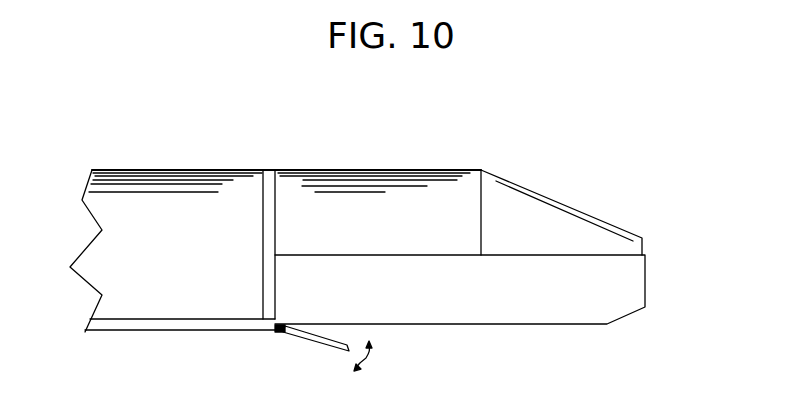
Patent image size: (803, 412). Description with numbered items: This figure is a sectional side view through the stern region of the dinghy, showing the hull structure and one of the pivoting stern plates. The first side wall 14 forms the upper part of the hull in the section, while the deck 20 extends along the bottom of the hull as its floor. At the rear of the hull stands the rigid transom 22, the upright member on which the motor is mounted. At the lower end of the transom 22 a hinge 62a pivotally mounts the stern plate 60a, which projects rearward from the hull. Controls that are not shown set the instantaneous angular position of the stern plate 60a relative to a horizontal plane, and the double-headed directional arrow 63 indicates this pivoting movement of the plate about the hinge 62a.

The first side wall 14 is at (346, 205).
The rigid transom 22 is at (263, 212).
The deck 20 is at (203, 319).
The hinge 62a is at (280, 323).
The stern plate 60a is at (318, 348).
The double-headed directional arrow 63 is at (372, 360).